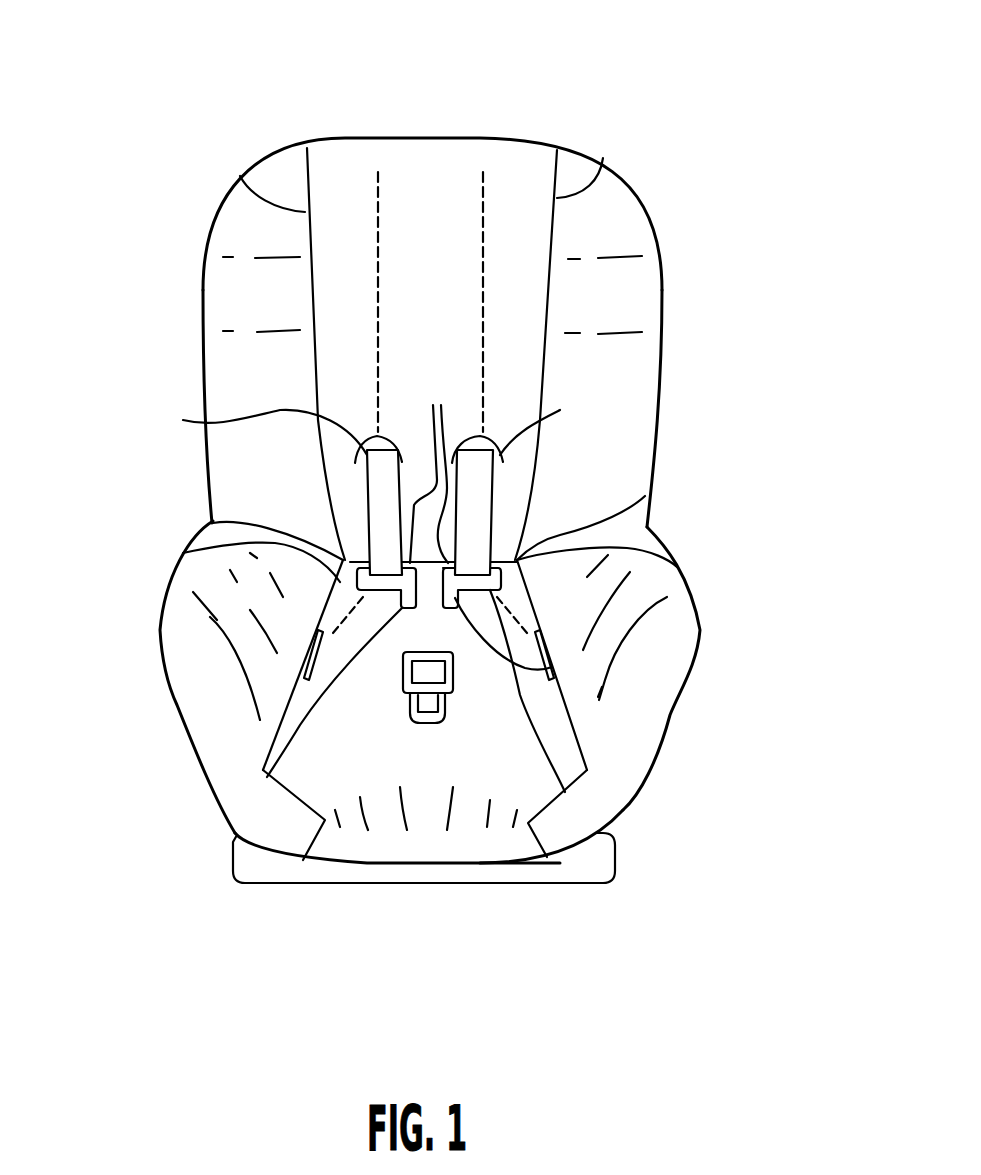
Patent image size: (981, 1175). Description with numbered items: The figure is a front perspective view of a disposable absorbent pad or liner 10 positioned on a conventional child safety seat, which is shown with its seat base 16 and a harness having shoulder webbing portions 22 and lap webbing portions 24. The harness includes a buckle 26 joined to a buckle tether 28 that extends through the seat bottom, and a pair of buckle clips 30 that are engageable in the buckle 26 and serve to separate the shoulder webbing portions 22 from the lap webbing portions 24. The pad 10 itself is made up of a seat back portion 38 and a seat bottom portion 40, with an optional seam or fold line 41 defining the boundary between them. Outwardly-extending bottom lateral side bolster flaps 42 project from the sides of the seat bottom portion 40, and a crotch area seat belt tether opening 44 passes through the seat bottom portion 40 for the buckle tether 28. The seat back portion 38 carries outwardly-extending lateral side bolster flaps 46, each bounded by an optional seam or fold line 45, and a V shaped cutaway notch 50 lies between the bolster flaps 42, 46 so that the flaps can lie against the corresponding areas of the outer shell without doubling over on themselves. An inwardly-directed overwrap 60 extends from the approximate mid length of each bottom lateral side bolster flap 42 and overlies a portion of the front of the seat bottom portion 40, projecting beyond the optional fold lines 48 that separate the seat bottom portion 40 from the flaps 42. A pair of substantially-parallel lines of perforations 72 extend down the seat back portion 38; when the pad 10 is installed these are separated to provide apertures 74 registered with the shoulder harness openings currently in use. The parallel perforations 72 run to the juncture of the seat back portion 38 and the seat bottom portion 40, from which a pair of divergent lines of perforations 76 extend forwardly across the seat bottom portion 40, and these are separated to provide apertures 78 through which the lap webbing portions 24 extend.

The pad or liner 10 is at (150, 293).
The seat base 16 is at (325, 875).
The shoulder webbing portions 22 is at (360, 560).
The lap webbing portions 24 is at (263, 771).
The buckle 26 is at (383, 700).
The buckle tether 28 is at (453, 703).
The buckle clips 30 is at (429, 470).
The seat back portion 38 is at (428, 190).
The seat bottom portion 40 is at (403, 683).
The seam or fold line 41 is at (343, 560).
The bottom lateral side bolster flaps 42 is at (203, 673).
The crotch area seat belt tether opening 44 is at (440, 723).
The seam or fold line 45 is at (241, 178).
The lateral side bolster flaps 46 is at (223, 293).
The fold lines 48 is at (183, 553).
The V shaped cutaway notch 50 is at (214, 513).
The overwrap 60 is at (282, 838).
The lines of perforations 72 is at (378, 193).
The apertures 74 is at (183, 420).
The divergent lines of perforations 76 is at (330, 600).
The apertures 78 is at (287, 713).